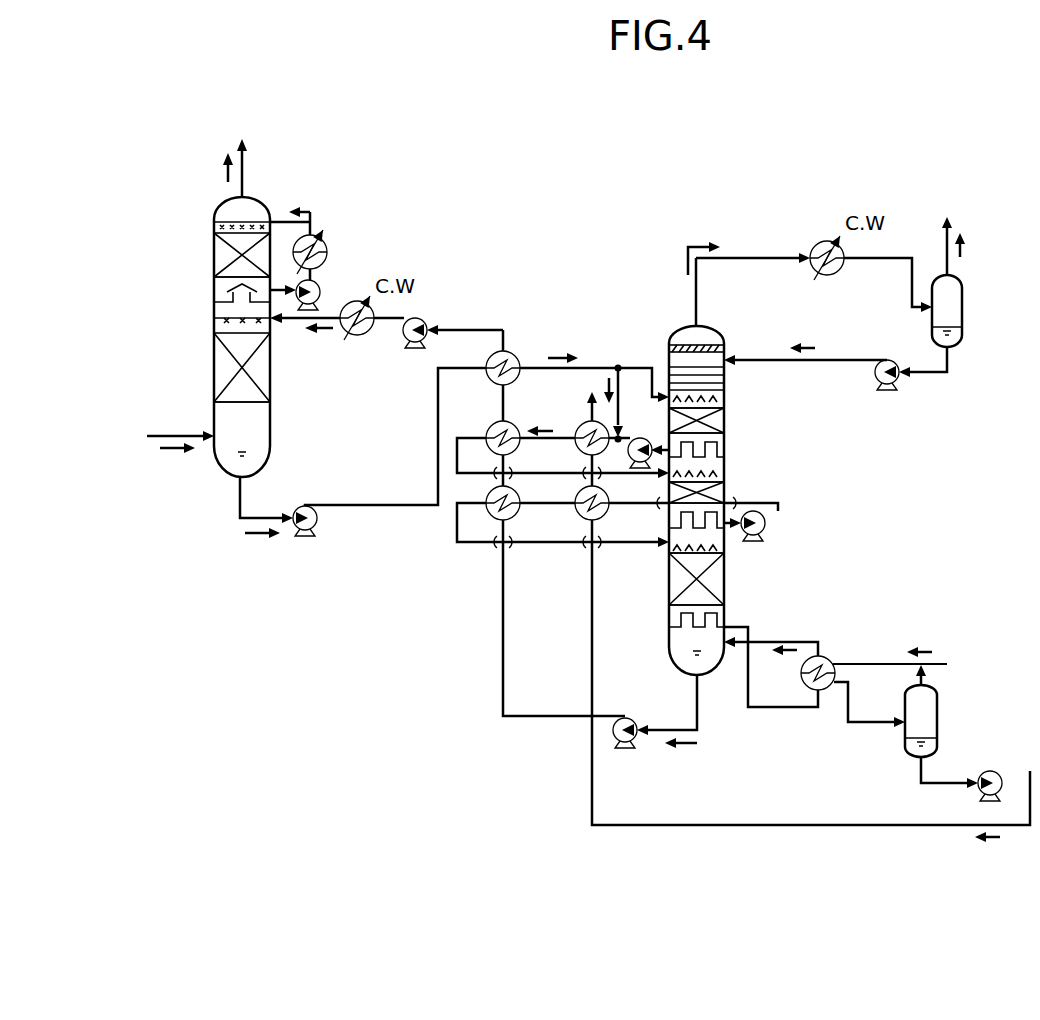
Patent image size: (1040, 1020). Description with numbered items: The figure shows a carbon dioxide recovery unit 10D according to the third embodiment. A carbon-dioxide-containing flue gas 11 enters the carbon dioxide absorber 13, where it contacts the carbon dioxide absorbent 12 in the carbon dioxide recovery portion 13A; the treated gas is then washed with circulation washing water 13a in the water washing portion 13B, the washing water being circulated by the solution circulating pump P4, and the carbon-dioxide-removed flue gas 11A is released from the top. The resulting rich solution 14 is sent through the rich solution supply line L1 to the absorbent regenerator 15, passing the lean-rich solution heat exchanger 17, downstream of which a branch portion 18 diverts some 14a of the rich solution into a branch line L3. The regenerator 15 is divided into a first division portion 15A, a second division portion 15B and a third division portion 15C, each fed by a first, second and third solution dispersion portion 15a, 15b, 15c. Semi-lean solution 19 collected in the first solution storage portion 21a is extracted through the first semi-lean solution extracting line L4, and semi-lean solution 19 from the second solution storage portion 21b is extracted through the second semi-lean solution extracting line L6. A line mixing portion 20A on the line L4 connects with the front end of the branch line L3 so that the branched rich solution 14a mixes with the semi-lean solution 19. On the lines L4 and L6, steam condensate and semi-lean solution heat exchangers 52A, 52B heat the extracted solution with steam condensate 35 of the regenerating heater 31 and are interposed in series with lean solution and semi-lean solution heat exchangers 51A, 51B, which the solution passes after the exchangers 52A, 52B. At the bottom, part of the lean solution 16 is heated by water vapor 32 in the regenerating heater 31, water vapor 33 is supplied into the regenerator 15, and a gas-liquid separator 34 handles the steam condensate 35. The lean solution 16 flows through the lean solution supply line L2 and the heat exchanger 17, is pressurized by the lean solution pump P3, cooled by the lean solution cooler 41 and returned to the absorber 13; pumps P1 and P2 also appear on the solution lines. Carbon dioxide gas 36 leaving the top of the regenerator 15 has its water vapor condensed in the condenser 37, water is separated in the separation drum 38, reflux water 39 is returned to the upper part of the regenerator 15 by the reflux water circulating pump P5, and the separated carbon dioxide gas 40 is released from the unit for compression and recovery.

The CO2 recovery unit 10D is at (457, 132).
The CO2-containing flue gas 11 is at (172, 456).
The CO2-removed flue gas 11A is at (222, 170).
The CO2 absorbent 12 is at (314, 334).
The CO2 absorber 13 is at (255, 190).
The CO2 recovery portion 13A is at (220, 370).
The water washing portion 13B is at (220, 256).
The circulation washing water 13a is at (310, 212).
The rich solution 14 is at (265, 540).
The some of the rich solution 14a is at (606, 392).
The absorbent regenerator 15 is at (664, 326).
The first division portion 15A is at (720, 425).
The second division portion 15B is at (667, 492).
The third division portion 15C is at (722, 578).
The first solution dispersion portion 15a is at (712, 395).
The second solution dispersion portion 15b is at (712, 477).
The third solution dispersion portion 15c is at (716, 546).
The lean solution 16 is at (688, 747).
The lean-rich solution heat exchanger 17 is at (510, 350).
The branch portion 18 is at (618, 366).
The semi-lean solution 19 is at (543, 428).
The line mixing portion 20A is at (624, 437).
The first solution storage portion 21a is at (724, 455).
The second solution storage portion 21b is at (668, 524).
The regenerating heater 31 is at (826, 659).
The water vapor 32 is at (921, 650).
The water vapor 33 is at (786, 656).
The gas-liquid separator 34 is at (930, 712).
The steam condensate 35 is at (990, 841).
The CO2 gas 36 is at (694, 246).
The condenser 37 is at (820, 241).
The separation drum 38 is at (958, 303).
The reflux water 39 is at (958, 338).
The CO2 gas 40 is at (966, 250).
The lean solution cooler 41 is at (357, 336).
The lean solution and semi-lean solution heat exchanger 51A is at (490, 424).
The lean solution and semi-lean solution heat exchanger 51B is at (517, 492).
The steam condensate and semi-lean solution heat exchanger 52A is at (578, 452).
The steam condensate and semi-lean solution heat exchanger 52B is at (580, 517).
The pump P1 is at (304, 507).
The pump P2 is at (631, 719).
The lean solution pump P3 is at (421, 323).
The solution circulating pump P4 is at (320, 291).
The reflux water circulating pump P5 is at (892, 362).
The rich solution supply line L1 is at (400, 508).
The lean solution supply line L2 is at (501, 610).
The branch line L3 is at (642, 366).
The first semi-lean solution extracting line L4 is at (589, 418).
The second semi-lean solution extracting line L6 is at (779, 501).